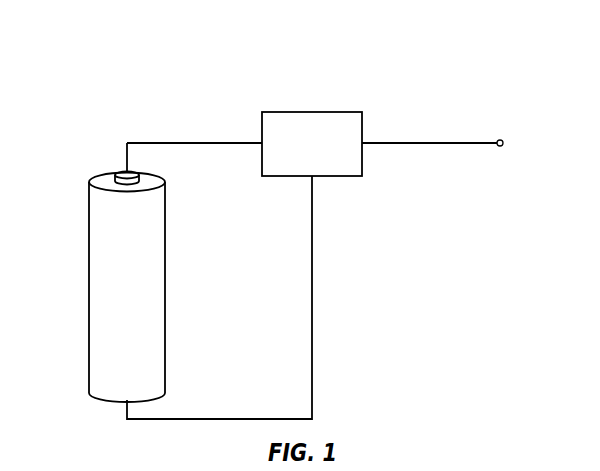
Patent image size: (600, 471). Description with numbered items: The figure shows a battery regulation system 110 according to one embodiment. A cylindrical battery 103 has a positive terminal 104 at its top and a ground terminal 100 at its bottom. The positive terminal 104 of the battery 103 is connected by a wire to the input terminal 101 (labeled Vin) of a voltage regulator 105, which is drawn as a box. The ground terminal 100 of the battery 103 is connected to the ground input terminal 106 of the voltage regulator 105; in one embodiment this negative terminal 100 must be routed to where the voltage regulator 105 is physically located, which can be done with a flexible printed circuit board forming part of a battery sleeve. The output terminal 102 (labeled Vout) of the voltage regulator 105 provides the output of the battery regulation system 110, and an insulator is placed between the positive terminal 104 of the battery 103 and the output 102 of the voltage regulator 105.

The battery regulation system 110 is at (118, 53).
The voltage regulator 105 is at (313, 111).
The input terminal 101 is at (256, 142).
The output terminal 102 is at (367, 142).
The ground input terminal 106 is at (310, 182).
The positive terminal 104 is at (122, 172).
The battery 103 is at (89, 288).
The ground terminal 100 is at (125, 402).